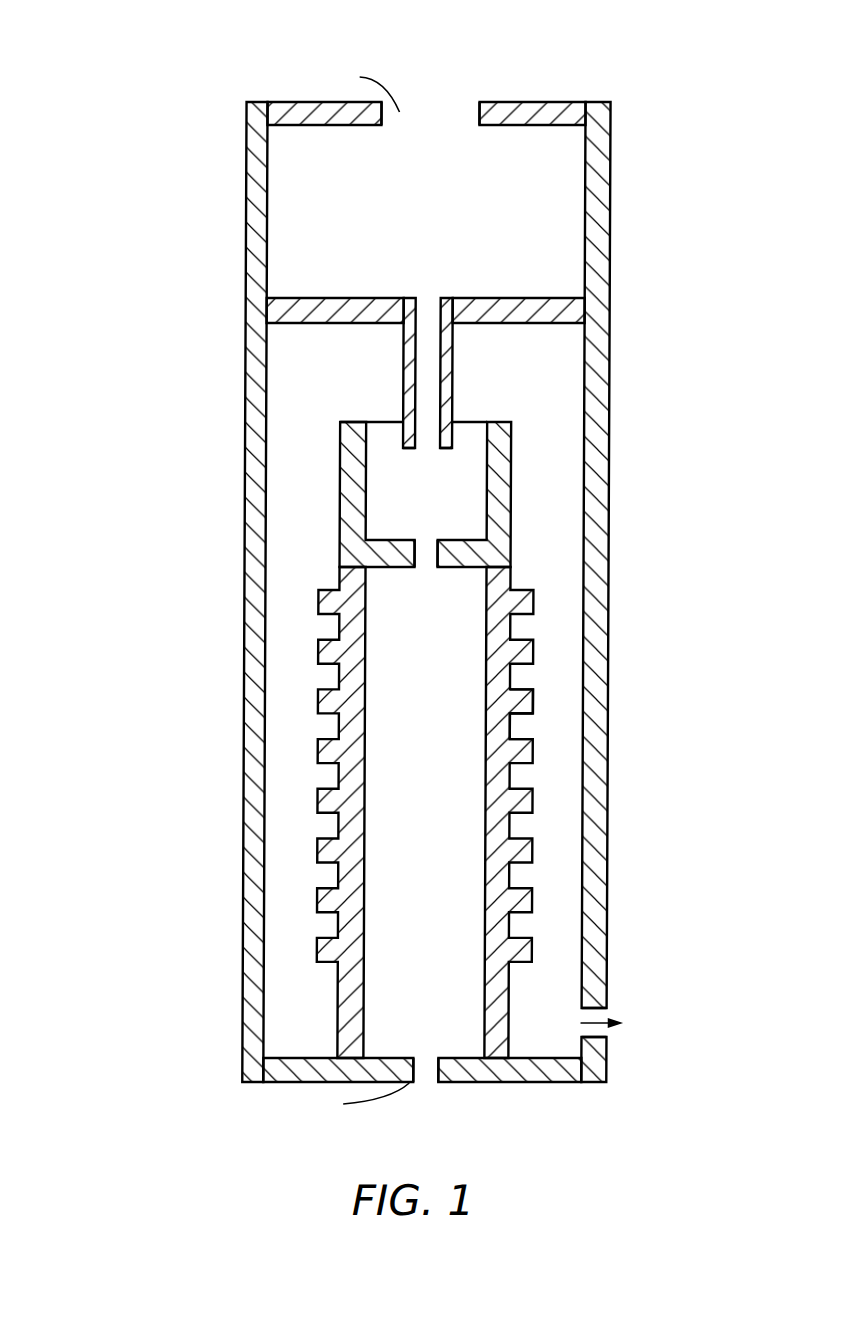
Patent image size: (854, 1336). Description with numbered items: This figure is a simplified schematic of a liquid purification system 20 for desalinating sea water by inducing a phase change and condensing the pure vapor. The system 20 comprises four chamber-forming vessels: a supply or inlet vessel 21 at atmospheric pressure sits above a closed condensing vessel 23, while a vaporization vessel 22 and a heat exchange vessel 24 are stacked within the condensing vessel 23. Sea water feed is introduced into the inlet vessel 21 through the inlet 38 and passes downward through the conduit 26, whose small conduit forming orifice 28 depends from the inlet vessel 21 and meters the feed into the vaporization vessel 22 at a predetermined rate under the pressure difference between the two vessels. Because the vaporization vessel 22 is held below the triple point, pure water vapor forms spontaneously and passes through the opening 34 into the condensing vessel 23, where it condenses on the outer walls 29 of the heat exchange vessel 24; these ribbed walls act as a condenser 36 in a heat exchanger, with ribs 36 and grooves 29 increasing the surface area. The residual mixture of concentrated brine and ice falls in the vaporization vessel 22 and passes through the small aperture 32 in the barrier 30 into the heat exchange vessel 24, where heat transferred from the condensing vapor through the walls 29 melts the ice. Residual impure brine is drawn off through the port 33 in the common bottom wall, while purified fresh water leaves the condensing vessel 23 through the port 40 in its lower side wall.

The system 20 is at (106, 192).
The supply or inlet vessel 21 is at (430, 211).
The vaporization vessel 22 is at (402, 520).
The condensing vessel 23 is at (284, 633).
The heat exchange vessel 24 is at (440, 834).
The tube 26 is at (410, 338).
The conduit forming orifice 28 is at (422, 445).
The walls 29 is at (520, 731).
The barrier 30 is at (384, 553).
The aperture 32 is at (423, 556).
The port 33 is at (433, 1069).
The opening 34 is at (372, 446).
The condenser 36 is at (518, 702).
The inlet opening 38 is at (429, 107).
The port 40 is at (594, 1009).